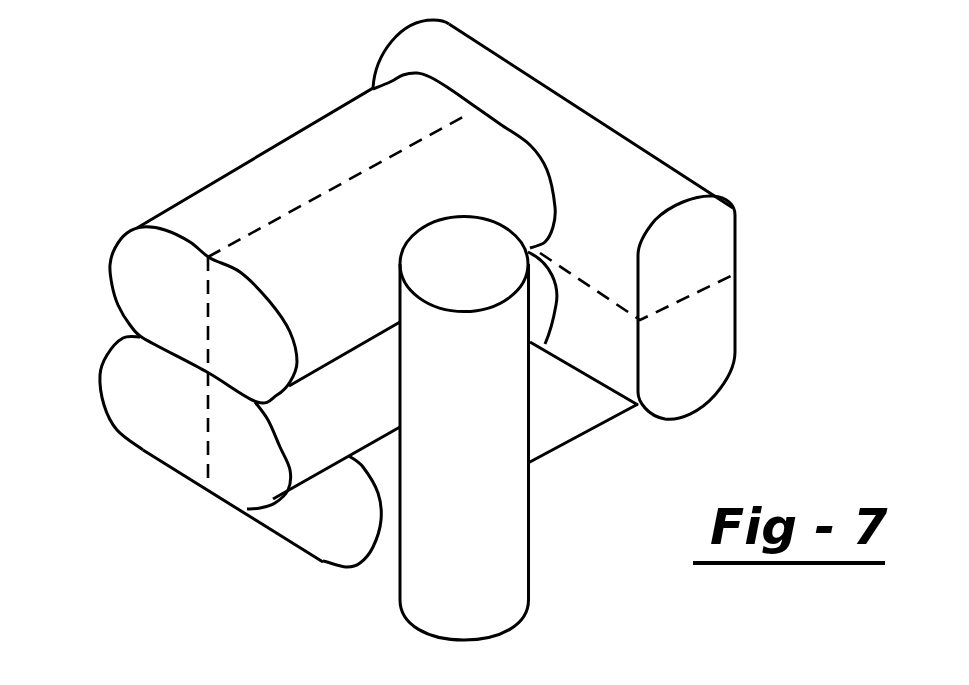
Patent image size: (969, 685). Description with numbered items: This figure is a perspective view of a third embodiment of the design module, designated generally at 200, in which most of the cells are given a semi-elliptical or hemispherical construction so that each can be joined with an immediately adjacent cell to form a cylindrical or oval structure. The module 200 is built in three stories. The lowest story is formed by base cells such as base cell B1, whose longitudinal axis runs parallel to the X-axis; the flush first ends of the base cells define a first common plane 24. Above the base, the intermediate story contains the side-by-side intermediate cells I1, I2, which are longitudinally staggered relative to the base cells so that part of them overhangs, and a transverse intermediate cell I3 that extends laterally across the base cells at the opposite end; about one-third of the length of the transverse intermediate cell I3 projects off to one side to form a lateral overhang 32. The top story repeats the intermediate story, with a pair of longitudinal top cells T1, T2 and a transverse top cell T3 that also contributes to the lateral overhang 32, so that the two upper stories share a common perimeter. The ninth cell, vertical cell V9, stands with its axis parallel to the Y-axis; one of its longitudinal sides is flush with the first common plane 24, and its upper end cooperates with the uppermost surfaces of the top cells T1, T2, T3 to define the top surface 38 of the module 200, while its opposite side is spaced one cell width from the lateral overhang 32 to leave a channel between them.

The module 200 is at (155, 160).
The top cell T1 is at (405, 183).
The top cell T2 is at (153, 272).
The transverse top cell T3 is at (697, 253).
The intermediate cell I1 is at (247, 470).
The intermediate cell I2 is at (147, 392).
The transverse intermediate cell I3 is at (703, 340).
The top surface 38 is at (546, 201).
The lateral overhang 32 is at (688, 423).
The base cell B1 is at (578, 405).
The vertical cell V9 is at (503, 562).
The first common plane 24 is at (313, 509).